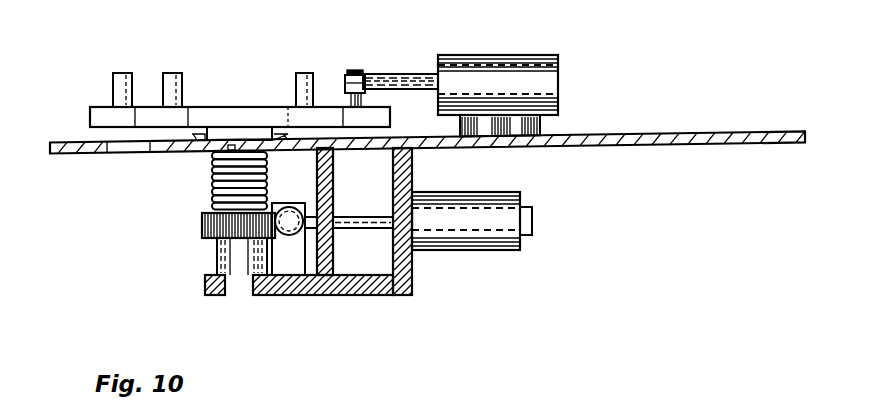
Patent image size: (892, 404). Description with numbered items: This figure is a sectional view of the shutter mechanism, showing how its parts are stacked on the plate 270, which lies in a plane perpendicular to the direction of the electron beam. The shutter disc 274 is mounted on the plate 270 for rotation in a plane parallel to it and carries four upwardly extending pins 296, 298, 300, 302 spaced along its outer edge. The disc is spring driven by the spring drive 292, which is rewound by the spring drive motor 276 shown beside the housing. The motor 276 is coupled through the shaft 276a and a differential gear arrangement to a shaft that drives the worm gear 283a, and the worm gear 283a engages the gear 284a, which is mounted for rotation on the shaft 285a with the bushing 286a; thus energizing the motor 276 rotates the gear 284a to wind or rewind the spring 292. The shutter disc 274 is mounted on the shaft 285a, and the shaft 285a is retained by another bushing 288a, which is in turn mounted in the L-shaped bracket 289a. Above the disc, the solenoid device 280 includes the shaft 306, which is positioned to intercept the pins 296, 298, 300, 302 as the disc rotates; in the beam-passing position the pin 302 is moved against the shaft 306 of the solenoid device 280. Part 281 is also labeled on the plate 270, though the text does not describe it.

The plate 270 is at (746, 100).
The shutter disc 274 is at (92, 116).
The spring drive motor 276 is at (490, 251).
The shaft 276a is at (376, 236).
The solenoid device 280 is at (495, 55).
The slot 281 is at (115, 155).
The worm gear 283a is at (296, 230).
The gear 284a is at (202, 226).
The shaft 285a is at (250, 294).
The bushing 286a is at (217, 253).
The bushing 288a is at (226, 296).
The L-shaped bracket 289a is at (408, 190).
The spring drive 292 is at (212, 178).
The pin 296 is at (168, 73).
The pin 298 is at (126, 73).
The pin 300 is at (299, 73).
The pin 302 is at (352, 70).
The shaft 306 is at (392, 76).